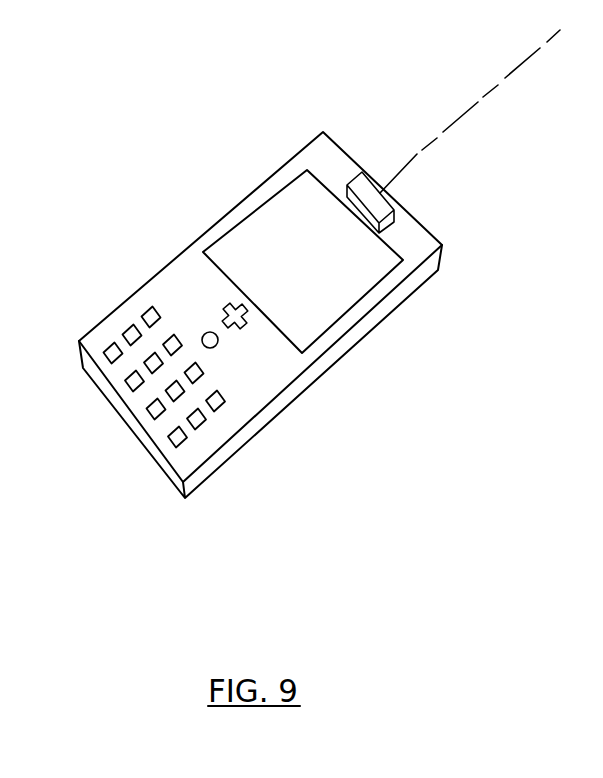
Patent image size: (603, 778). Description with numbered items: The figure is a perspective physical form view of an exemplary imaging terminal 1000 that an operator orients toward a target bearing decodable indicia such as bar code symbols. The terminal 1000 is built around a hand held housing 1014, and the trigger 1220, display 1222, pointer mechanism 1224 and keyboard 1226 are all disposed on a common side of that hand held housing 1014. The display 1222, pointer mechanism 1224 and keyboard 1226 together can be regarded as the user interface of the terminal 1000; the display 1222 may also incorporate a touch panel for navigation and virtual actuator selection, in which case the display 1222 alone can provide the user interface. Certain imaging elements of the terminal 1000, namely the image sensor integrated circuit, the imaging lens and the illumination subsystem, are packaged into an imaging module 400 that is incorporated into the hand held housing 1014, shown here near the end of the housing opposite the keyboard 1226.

The terminal 1000 is at (220, 150).
The imaging module 400 is at (384, 203).
The display 1222 is at (319, 301).
The pointer mechanism 1224 is at (247, 325).
The trigger 1220 is at (218, 343).
The hand held housing 1014 is at (247, 403).
The keyboard 1226 is at (226, 398).